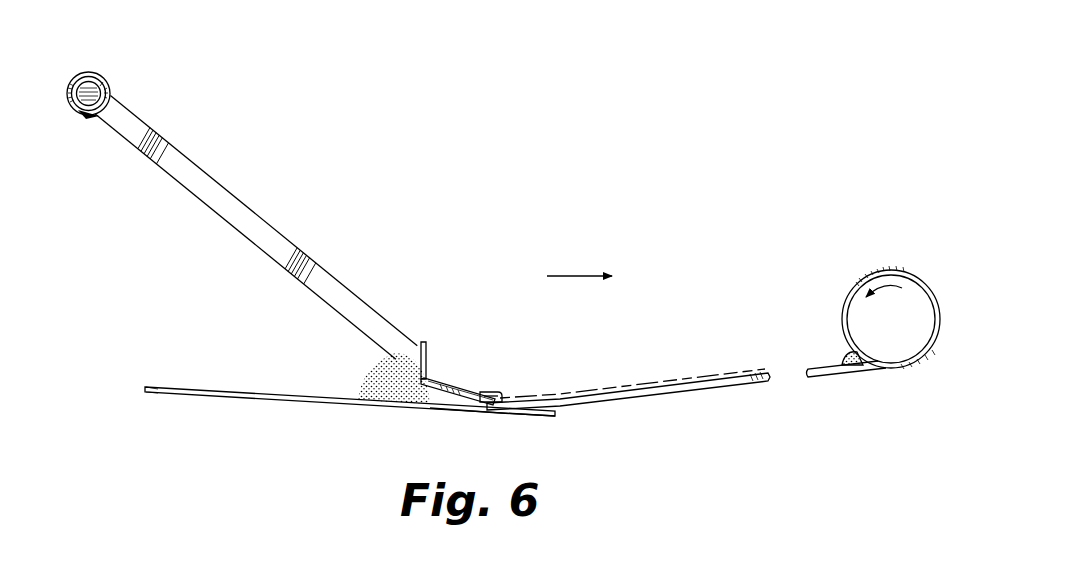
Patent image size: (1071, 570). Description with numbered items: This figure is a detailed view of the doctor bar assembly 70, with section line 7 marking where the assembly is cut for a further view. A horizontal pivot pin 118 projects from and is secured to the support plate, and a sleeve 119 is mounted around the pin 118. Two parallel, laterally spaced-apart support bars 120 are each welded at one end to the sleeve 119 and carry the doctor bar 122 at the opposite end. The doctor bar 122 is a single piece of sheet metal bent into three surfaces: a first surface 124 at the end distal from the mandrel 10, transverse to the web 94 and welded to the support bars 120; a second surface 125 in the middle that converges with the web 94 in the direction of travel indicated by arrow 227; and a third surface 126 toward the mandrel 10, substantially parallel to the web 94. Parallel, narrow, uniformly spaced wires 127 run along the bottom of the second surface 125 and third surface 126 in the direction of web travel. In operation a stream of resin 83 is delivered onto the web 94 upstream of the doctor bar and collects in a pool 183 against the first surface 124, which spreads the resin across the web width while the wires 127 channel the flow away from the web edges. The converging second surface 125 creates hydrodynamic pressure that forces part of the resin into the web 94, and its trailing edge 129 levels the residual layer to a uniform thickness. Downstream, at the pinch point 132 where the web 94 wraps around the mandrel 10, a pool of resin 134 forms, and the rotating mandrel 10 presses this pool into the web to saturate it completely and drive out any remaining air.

The section line 7- 7 is at (64, 23).
The mandrel 10 is at (910, 299).
The pipe support assembly 70 is at (343, 146).
The stream of resin 83 is at (382, 376).
The web 94 is at (280, 392).
The horizontal pivot pin 118 is at (108, 85).
The sleeve 119 is at (96, 116).
The support bar 120 is at (320, 268).
The doctor bar 122 is at (445, 372).
The first surface 124 is at (424, 340).
The second surface 125 is at (470, 393).
The third surface 126 is at (497, 390).
The wires 127 is at (465, 412).
The trailing edge 129 is at (520, 411).
The pinch point 132 is at (864, 368).
The pool of resin 134 is at (848, 357).
The pool 183 is at (403, 404).
The arrow 227 is at (640, 254).